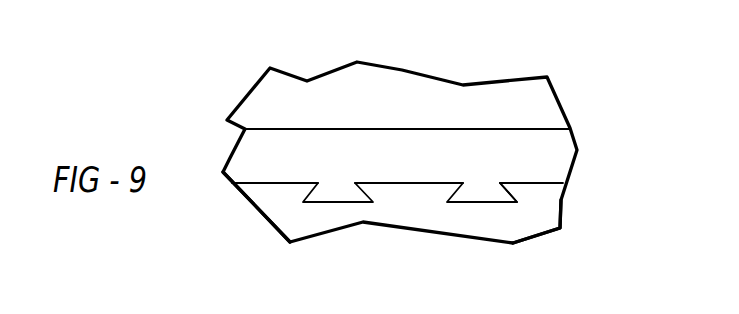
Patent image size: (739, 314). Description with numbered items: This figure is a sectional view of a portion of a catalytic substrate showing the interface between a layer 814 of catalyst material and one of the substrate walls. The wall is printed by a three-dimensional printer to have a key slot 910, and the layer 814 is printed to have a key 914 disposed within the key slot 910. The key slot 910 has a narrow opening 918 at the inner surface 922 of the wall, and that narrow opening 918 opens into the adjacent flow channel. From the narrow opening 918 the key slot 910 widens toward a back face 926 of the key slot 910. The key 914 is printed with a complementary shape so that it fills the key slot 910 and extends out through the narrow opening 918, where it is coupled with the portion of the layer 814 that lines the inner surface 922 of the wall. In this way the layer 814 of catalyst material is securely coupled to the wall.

The layer of catalyst material 814 is at (272, 156).
The inner surface 922 is at (410, 183).
The key 914 is at (342, 190).
The back face 926 is at (484, 201).
The narrow opening 918 is at (500, 183).
The key slot 910 is at (515, 203).